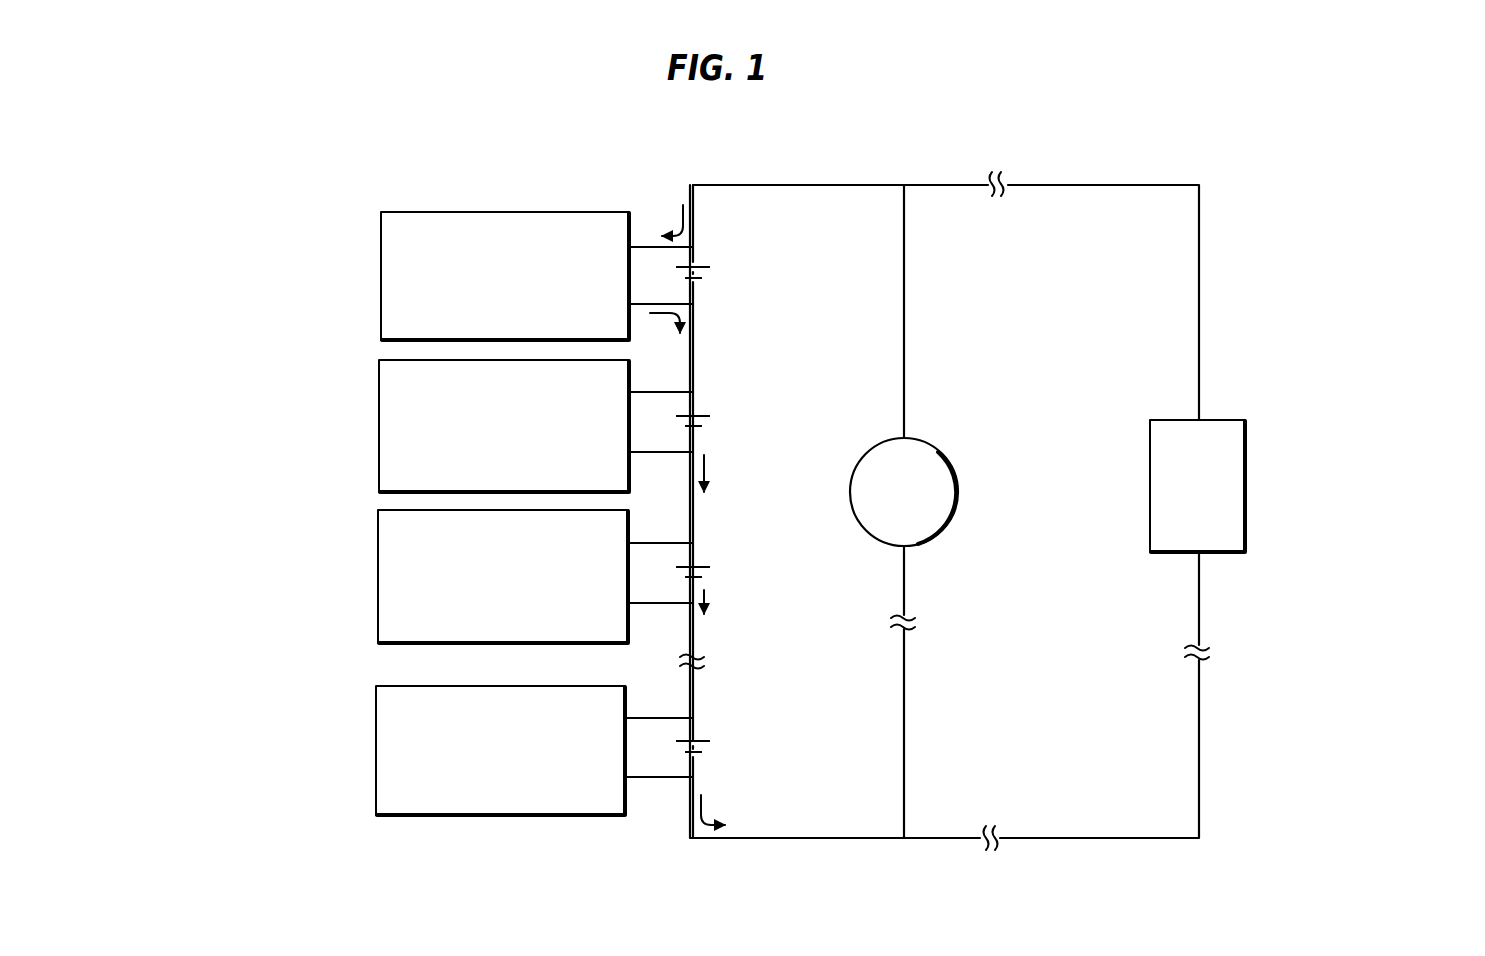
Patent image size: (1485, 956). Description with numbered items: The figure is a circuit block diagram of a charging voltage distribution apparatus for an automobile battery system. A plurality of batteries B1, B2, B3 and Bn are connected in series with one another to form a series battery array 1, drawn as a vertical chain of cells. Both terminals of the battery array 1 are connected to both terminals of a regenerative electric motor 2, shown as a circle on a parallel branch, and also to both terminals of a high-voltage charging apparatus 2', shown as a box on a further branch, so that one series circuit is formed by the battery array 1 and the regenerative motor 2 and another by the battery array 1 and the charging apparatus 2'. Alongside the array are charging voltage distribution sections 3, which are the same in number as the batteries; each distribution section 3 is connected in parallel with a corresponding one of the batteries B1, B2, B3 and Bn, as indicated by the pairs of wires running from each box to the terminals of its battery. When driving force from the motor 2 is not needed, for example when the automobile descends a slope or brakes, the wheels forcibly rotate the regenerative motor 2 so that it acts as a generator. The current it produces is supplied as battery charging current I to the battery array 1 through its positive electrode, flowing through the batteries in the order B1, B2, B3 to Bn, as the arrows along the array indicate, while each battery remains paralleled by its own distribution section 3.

The battery array 1 is at (670, 223).
The regenerative electric motor 2 is at (983, 444).
The high-voltage charging apparatus 2' is at (1311, 431).
The charging voltage distribution section 3 is at (379, 723).
The battery B1 is at (708, 271).
The battery B2 is at (708, 420).
The battery B3 is at (708, 571).
The battery Bn is at (708, 746).
The battery charging current I is at (808, 164).